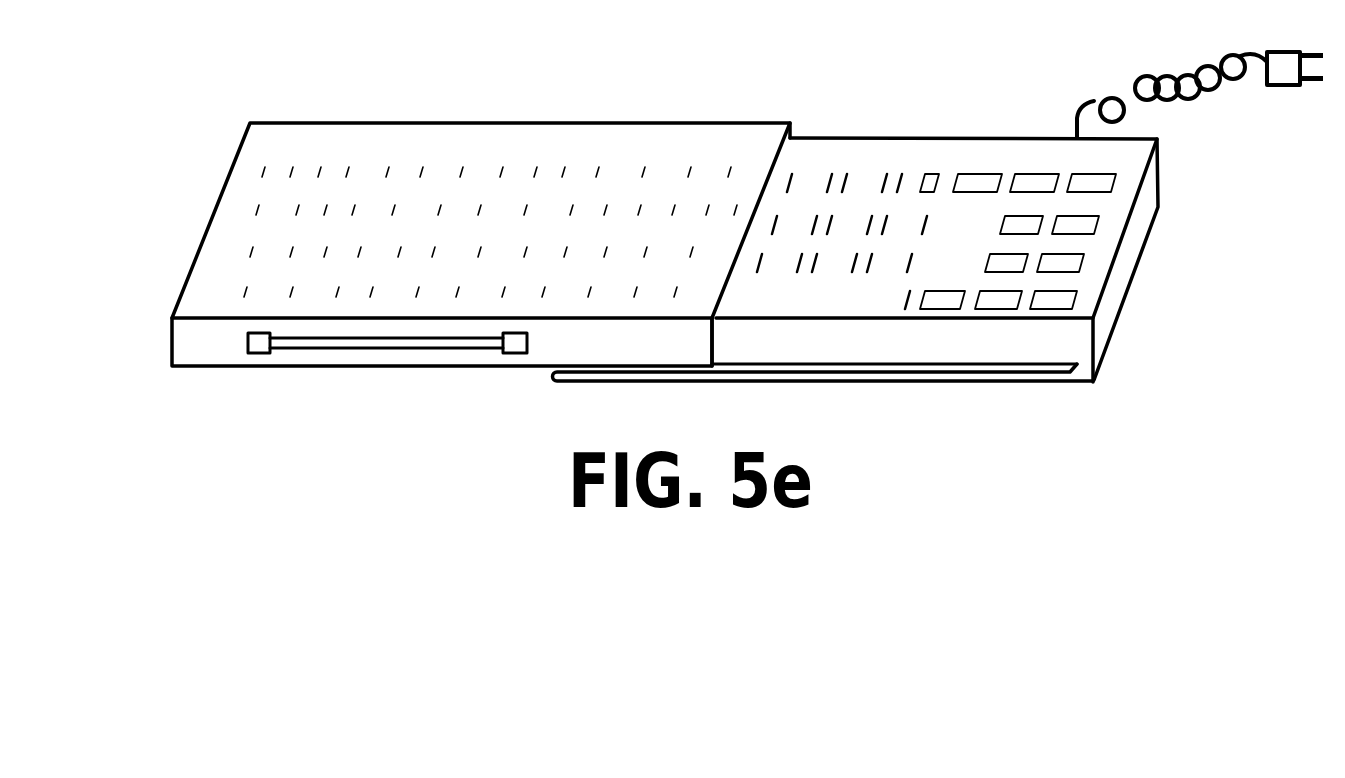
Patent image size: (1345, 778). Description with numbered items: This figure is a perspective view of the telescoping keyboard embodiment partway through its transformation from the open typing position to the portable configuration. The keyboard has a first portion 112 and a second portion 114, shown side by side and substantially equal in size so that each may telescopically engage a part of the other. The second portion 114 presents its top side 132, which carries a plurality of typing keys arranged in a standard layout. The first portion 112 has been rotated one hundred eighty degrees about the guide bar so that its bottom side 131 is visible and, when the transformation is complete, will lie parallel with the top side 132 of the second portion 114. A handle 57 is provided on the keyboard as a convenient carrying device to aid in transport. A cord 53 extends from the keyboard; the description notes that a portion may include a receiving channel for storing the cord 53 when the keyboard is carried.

The first portion 112 is at (415, 123).
The bottom side 131 is at (207, 285).
The top side 132 is at (860, 150).
The handle 57 is at (430, 343).
The second portion 114 is at (990, 383).
The cord 53 is at (1177, 105).